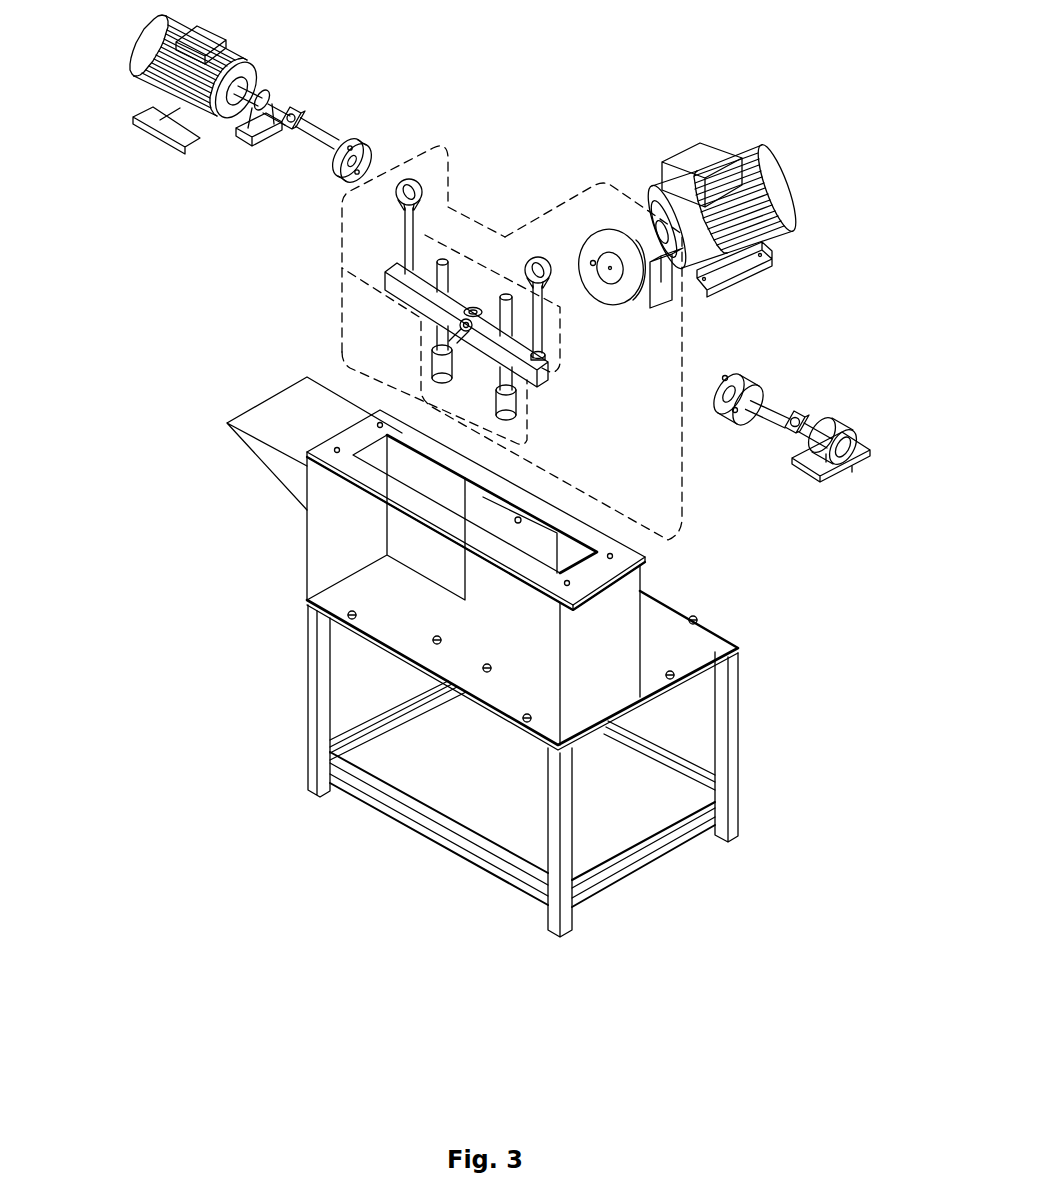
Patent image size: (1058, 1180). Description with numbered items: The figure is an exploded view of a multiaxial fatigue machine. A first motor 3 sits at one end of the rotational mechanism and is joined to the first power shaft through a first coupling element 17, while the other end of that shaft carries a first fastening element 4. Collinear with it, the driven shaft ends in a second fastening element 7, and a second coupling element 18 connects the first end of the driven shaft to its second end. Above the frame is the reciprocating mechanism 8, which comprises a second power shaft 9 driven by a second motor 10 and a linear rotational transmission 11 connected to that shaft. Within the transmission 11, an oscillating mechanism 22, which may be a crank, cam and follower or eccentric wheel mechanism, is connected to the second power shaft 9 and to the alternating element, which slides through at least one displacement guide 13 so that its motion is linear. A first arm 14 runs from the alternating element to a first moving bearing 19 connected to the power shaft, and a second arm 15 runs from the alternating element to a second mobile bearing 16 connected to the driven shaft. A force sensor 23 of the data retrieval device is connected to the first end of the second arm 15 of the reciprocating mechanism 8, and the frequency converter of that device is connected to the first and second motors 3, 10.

The first motor 3 is at (148, 42).
The first fastening element 4 is at (356, 165).
The second fastening element 7 is at (745, 385).
The reciprocating mechanism 8 is at (341, 237).
The second power shaft 9 is at (660, 255).
The second motor 10 is at (756, 157).
The linear rotational transmission 11 is at (566, 232).
The displacement guide 13 is at (517, 386).
The first arm 14 is at (411, 246).
The second arm 15 is at (543, 305).
The second mobile bearing 16 is at (548, 270).
The first coupling element 17 is at (291, 118).
The second coupling element 18 is at (798, 423).
The first moving bearing 19 is at (405, 185).
The oscillating mechanism 22 is at (446, 342).
The force sensor 23 is at (546, 352).